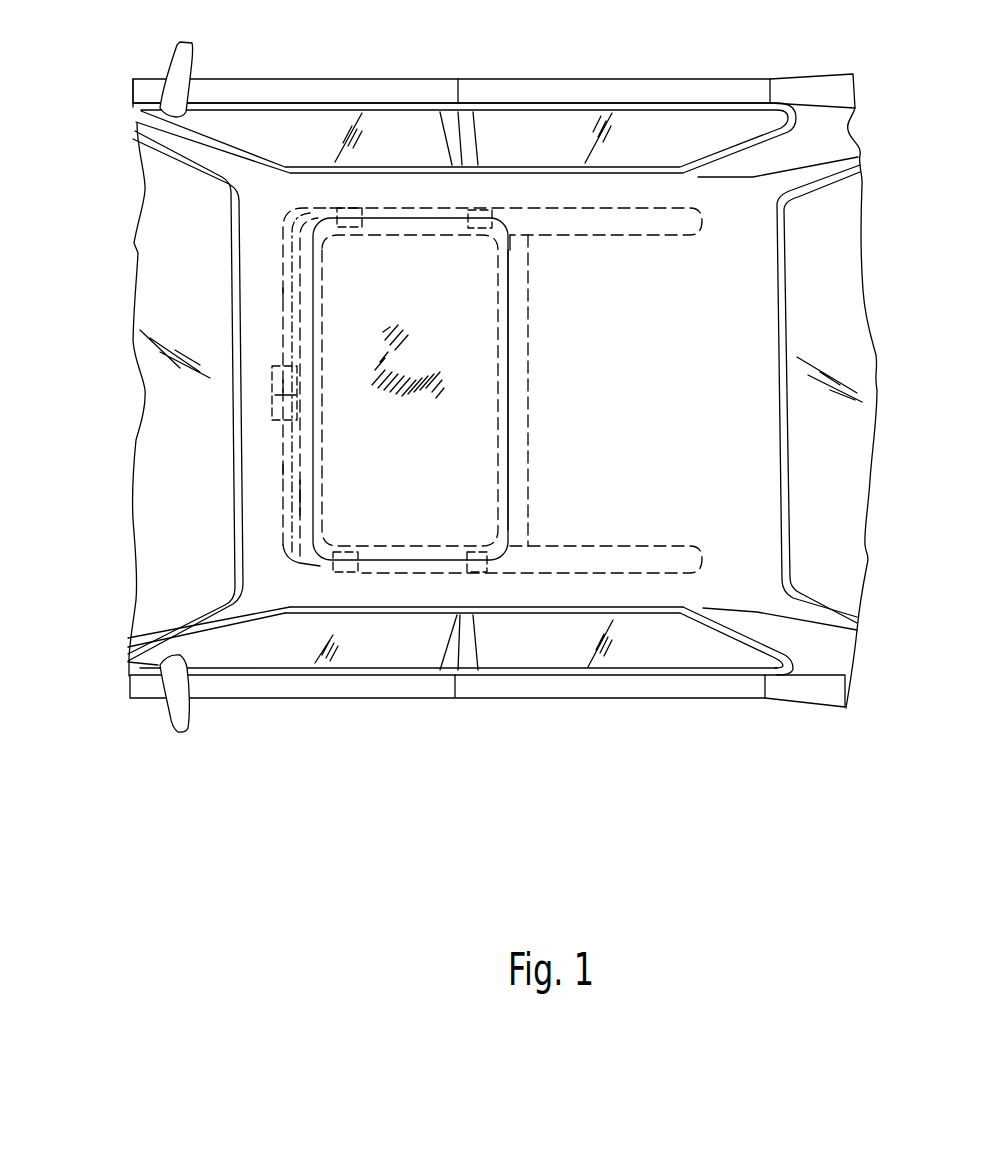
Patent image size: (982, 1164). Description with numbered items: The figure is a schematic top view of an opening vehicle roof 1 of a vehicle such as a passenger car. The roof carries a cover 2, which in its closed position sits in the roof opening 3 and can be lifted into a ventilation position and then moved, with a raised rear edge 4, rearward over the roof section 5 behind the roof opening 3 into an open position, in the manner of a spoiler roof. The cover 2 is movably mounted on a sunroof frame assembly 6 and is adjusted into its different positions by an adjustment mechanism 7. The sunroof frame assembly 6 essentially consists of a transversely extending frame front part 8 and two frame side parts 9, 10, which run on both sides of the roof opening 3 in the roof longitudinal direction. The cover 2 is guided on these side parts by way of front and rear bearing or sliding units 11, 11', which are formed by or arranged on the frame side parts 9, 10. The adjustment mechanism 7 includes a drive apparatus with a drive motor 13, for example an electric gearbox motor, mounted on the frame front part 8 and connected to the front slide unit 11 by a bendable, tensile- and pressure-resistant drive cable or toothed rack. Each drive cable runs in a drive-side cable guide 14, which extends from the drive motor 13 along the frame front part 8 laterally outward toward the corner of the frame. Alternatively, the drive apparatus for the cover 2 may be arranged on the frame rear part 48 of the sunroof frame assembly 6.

The vehicle roof 1 is at (266, 254).
The cover 2 is at (456, 329).
The roof opening 3 is at (412, 192).
The rear edge 4 is at (521, 359).
The roof section 5 is at (617, 453).
The sunroof frame assembly 6 is at (538, 188).
The adjustment mechanism 7 is at (258, 386).
The frame front part 8 is at (305, 497).
The frame side part 9 is at (607, 560).
The frame side part 10 is at (593, 210).
The front bearing or sliding unit 11 is at (331, 393).
The rear bearing or sliding unit 11' is at (496, 397).
The drive motor 13 is at (276, 400).
The drive-side cable guide 14 is at (270, 293).
The frame rear part 48 is at (522, 302).